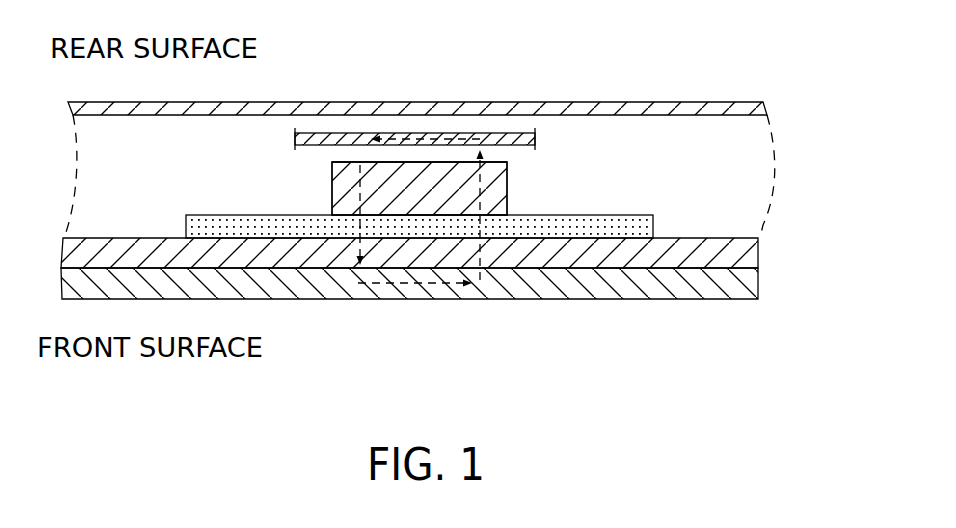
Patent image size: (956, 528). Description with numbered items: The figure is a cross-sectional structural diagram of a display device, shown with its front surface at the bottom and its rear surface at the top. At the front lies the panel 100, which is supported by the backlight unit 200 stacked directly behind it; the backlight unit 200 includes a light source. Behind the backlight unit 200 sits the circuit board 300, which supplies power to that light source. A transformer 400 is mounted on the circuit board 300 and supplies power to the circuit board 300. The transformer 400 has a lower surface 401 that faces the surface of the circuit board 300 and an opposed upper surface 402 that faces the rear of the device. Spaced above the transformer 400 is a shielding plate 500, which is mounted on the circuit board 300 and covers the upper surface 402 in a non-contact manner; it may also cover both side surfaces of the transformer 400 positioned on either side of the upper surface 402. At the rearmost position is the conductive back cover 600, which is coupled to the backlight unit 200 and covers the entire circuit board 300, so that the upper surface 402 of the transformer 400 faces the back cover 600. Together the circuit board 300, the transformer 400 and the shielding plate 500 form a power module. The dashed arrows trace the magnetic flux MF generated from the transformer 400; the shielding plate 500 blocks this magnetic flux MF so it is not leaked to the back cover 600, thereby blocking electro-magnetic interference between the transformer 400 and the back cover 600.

The panel 100 is at (747, 288).
The backlight unit 200 is at (745, 250).
The circuit board 300 is at (653, 227).
The transformer 400 is at (422, 197).
The lower surface of the transformer 401 is at (492, 214).
The upper surface of the transformer 402 is at (368, 163).
The shielding plate 500 is at (508, 133).
The conductive back cover 600 is at (643, 110).
The magnetic flux MF is at (402, 286).